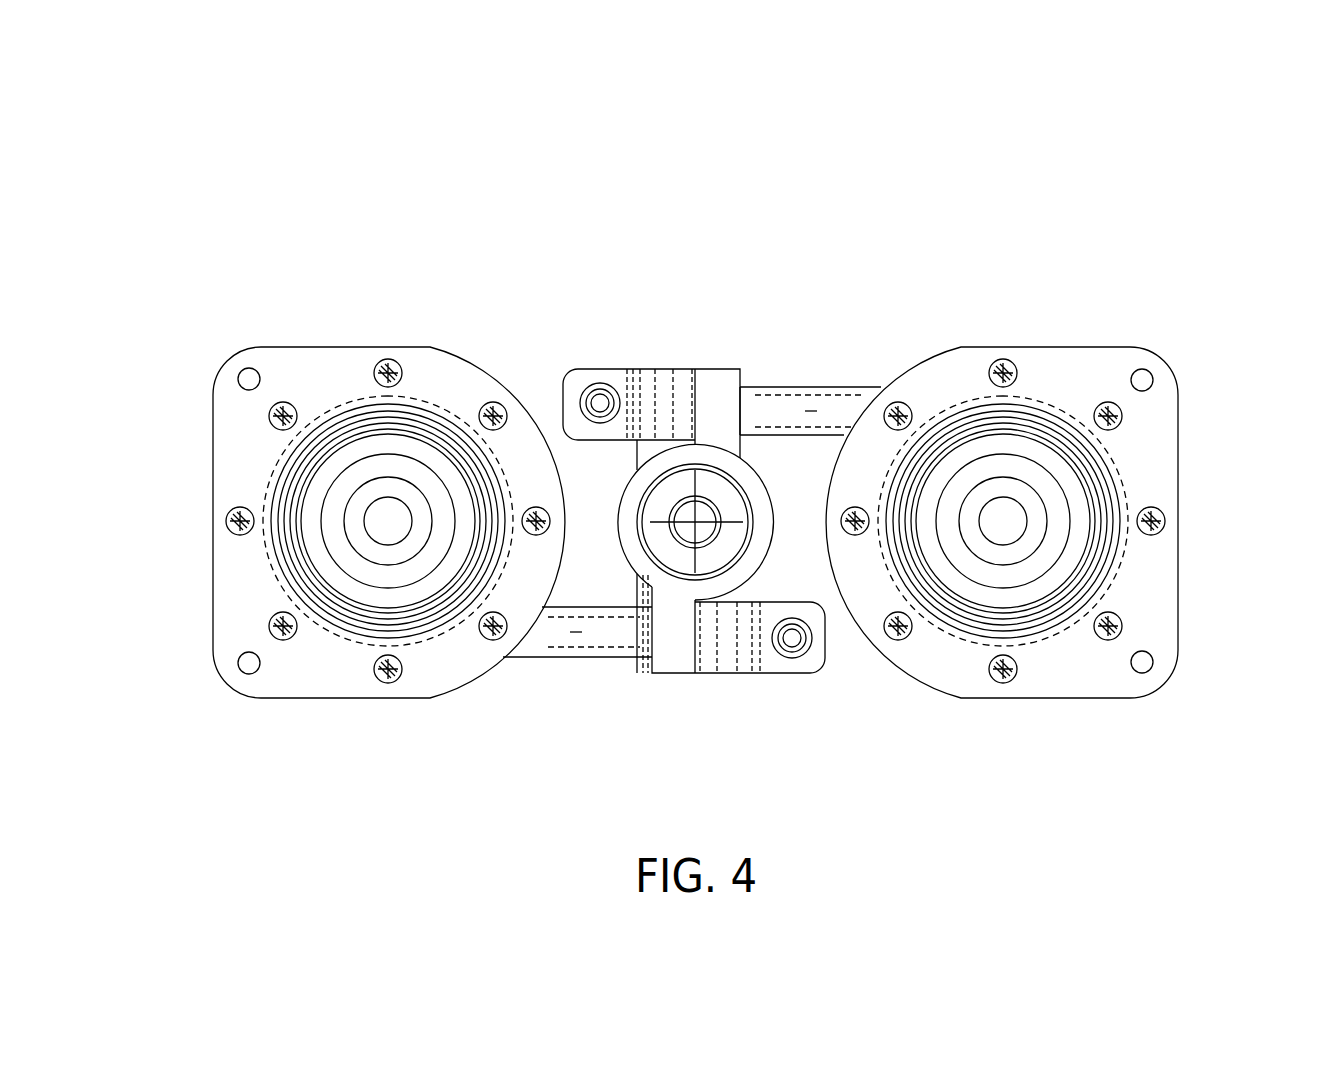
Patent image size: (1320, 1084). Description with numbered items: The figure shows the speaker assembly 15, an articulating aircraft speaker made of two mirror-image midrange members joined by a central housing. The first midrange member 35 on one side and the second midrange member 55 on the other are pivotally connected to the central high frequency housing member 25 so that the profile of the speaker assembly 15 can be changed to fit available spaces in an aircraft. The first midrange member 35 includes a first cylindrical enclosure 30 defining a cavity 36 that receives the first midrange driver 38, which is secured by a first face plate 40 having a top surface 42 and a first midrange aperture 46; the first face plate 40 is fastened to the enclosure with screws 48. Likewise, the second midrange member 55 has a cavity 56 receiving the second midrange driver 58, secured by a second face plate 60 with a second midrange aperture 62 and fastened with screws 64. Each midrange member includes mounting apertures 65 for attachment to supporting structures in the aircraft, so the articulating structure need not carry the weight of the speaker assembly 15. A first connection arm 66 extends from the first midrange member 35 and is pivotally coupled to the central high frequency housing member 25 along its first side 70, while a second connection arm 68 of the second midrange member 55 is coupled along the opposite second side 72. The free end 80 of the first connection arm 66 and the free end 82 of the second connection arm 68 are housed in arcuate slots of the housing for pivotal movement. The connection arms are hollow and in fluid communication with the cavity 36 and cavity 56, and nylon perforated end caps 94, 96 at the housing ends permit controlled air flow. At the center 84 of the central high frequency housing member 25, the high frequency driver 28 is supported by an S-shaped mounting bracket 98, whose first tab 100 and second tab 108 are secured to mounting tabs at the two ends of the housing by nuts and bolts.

The speaker assembly 15 is at (520, 186).
The central high frequency housing member 25 is at (706, 327).
The high frequency driver 28 is at (715, 557).
The first cylindrical enclosure 30 is at (362, 698).
The first midrange member 35 is at (279, 327).
The cavity 36 is at (323, 628).
The first midrange driver 38 is at (378, 478).
The first face plate 40 is at (245, 448).
The top surface 42 is at (452, 382).
The first midrange aperture 46 is at (285, 575).
The screws 48 is at (226, 521).
The second midrange member 55 is at (1058, 300).
The cavity 56 is at (1118, 460).
The second midrange driver 58 is at (1037, 545).
The second face plate 60 is at (1145, 597).
The second midrange aperture 62 is at (963, 407).
The screws 64 is at (1165, 521).
The mounting apertures 65 is at (249, 379).
The first connection arm 66 is at (545, 656).
The second connection arm 68 is at (806, 388).
The first side 70 is at (677, 662).
The second side 72 is at (718, 368).
The free end 80 is at (637, 657).
The free end 82 is at (765, 395).
The center 84 is at (615, 507).
The nylon perforated end cap 94 is at (702, 676).
The nylon perforated end cap 96 is at (643, 390).
The mounting bracket 98 is at (669, 412).
The first tab 100 is at (817, 665).
The second tab 108 is at (565, 382).